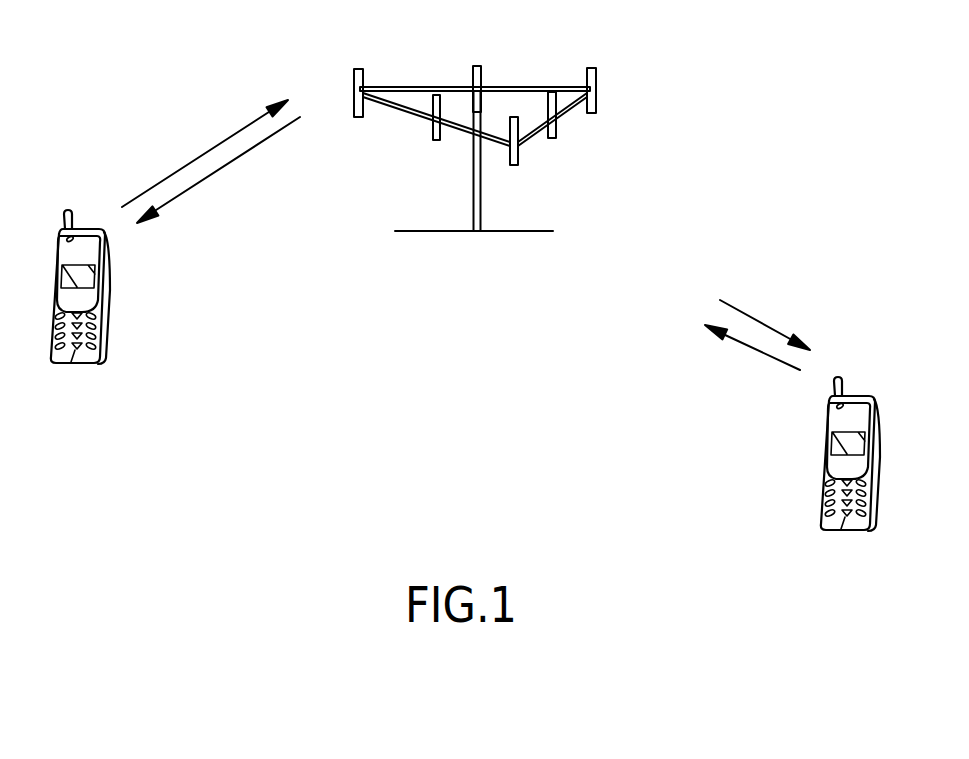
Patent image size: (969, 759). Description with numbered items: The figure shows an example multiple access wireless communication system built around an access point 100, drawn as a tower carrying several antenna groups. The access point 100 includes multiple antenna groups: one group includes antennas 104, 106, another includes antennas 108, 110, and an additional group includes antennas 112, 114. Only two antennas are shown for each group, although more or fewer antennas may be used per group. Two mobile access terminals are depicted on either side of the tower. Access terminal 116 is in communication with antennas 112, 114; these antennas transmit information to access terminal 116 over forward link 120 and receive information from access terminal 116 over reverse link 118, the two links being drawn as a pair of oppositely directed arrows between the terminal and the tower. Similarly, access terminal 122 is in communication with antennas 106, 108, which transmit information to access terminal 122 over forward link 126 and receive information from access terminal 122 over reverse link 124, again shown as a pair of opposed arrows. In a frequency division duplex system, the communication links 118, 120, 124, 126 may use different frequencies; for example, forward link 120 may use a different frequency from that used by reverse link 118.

The access point 100 is at (453, 231).
The antenna 104 is at (513, 165).
The antenna 106 is at (556, 138).
The antenna 108 is at (597, 100).
The antenna 110 is at (478, 64).
The antenna 112 is at (362, 79).
The antenna 114 is at (437, 140).
The access terminal 116 is at (85, 228).
The reverse link 118 is at (205, 152).
The forward link 120 is at (225, 162).
The access terminal 122 is at (852, 393).
The reverse link 124 is at (748, 347).
The forward link 126 is at (768, 325).